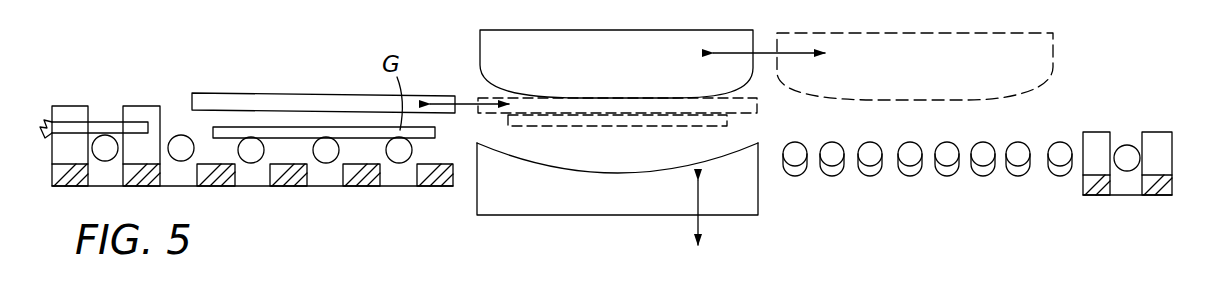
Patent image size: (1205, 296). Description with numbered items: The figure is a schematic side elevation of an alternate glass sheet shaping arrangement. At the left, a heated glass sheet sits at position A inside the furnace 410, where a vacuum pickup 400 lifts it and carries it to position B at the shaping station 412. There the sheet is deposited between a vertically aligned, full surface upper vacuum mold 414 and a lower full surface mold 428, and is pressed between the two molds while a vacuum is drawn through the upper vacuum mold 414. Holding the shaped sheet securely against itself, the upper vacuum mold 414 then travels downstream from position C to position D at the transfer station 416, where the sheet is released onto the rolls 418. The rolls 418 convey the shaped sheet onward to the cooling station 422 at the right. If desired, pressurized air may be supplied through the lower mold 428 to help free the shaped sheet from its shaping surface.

The vacuum pickup 400 is at (353, 95).
The furnace 410 is at (262, 60).
The shaping station 412 is at (618, 22).
The upper vacuum mold 414 is at (500, 29).
The transfer station 416 is at (925, 23).
The rolls 418 is at (947, 178).
The cooling station 422 is at (1145, 93).
The lower full surface mold 428 is at (607, 215).